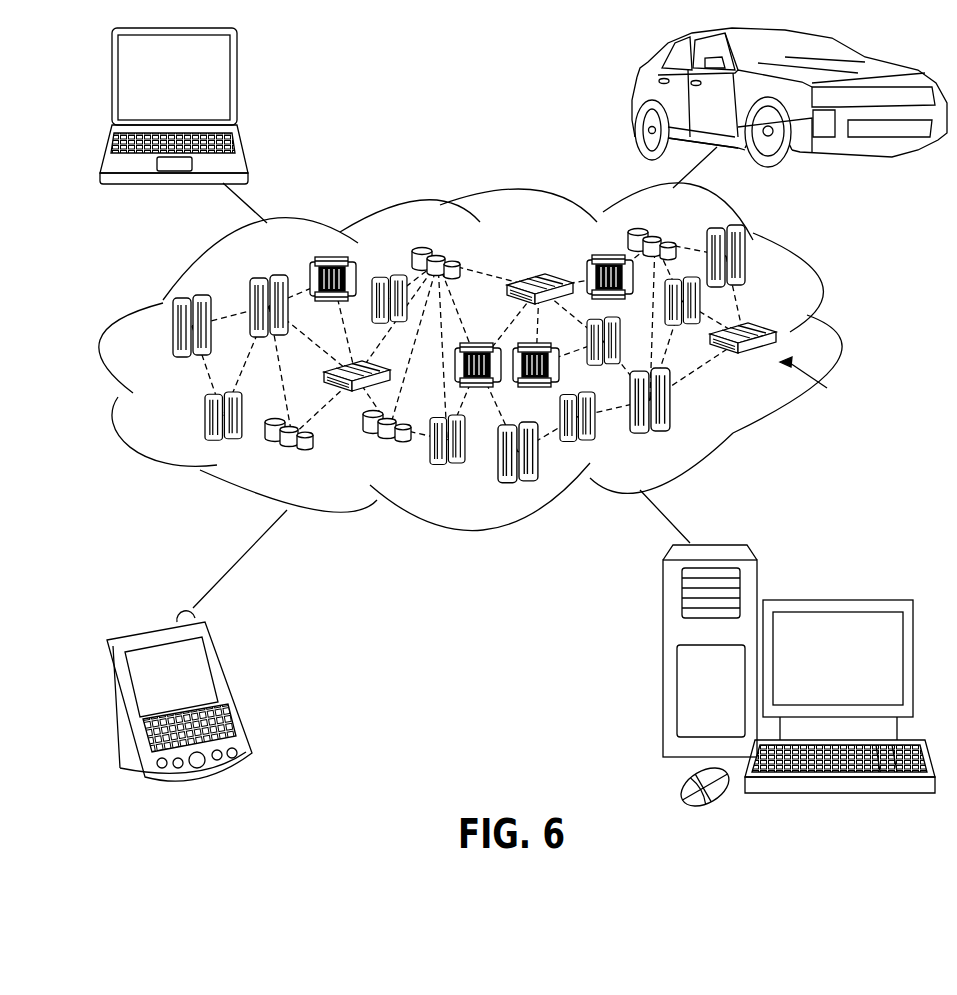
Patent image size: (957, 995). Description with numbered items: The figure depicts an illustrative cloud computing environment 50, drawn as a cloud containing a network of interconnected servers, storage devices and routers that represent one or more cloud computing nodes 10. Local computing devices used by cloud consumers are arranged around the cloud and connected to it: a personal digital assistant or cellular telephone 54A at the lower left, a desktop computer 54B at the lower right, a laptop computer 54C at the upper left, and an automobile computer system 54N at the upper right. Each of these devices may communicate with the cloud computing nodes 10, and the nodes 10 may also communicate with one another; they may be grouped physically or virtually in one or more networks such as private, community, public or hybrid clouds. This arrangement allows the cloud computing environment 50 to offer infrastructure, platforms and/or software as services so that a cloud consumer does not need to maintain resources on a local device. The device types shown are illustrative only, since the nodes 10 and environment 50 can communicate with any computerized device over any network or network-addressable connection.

The cloud computing node 10 is at (787, 366).
The cloud computing environment 50 is at (833, 333).
The personal digital assistant or cellular telephone 54A is at (233, 688).
The desktop computer 54B is at (837, 598).
The laptop computer 54C is at (238, 85).
The automobile computer system 54N is at (633, 97).